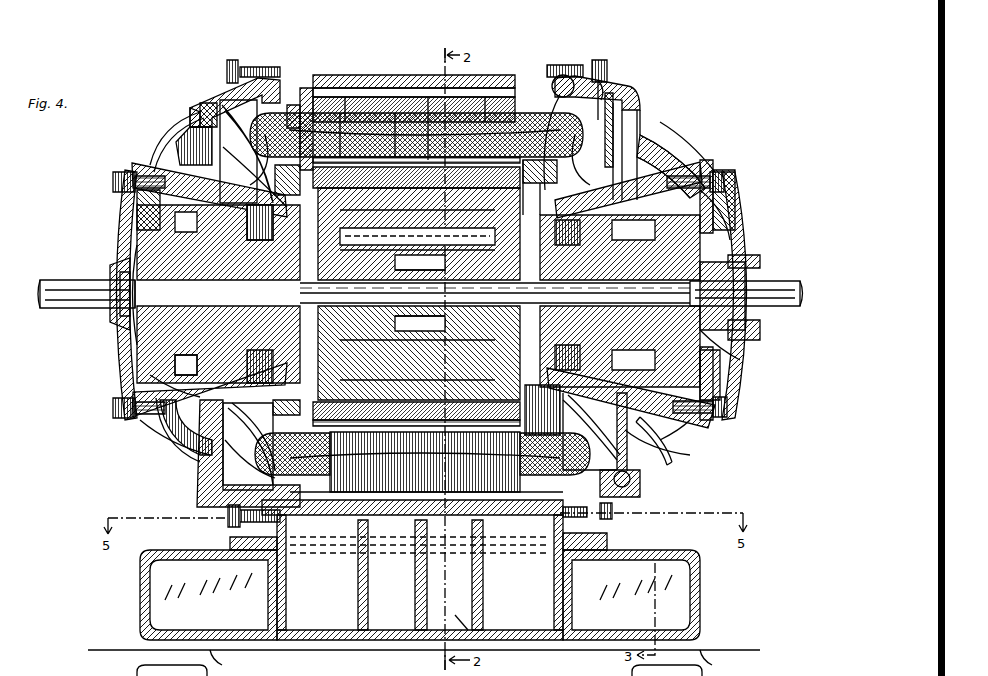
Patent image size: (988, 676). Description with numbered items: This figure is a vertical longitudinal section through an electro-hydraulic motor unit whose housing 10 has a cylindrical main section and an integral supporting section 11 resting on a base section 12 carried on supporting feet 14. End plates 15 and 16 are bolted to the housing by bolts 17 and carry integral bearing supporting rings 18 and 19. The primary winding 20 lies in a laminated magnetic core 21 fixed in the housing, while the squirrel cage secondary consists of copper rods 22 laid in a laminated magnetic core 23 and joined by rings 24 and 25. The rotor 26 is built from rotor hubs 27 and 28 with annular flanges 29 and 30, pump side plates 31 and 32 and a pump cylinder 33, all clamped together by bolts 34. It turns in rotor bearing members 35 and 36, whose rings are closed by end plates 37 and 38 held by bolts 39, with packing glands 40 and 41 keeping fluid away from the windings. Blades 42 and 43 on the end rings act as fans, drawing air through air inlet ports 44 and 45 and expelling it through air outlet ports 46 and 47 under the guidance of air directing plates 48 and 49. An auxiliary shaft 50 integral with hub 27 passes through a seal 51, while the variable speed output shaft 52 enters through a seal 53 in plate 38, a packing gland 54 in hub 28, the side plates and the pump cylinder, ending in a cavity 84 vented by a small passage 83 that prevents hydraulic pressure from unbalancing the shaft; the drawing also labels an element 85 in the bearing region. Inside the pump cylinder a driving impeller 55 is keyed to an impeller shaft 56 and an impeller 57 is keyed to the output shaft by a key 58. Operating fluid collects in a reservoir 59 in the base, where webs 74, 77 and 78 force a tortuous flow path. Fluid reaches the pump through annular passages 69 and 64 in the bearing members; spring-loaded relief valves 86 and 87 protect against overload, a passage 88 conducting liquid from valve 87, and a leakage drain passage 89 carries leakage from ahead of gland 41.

The housing 10 is at (395, 105).
The supporting section 11 is at (607, 540).
The base section 12 is at (140, 595).
The supporting feet 14 is at (222, 665).
The end plate 15 is at (212, 95).
The end plate 16 is at (630, 90).
The bolts 17 is at (234, 60).
The bearing supporting ring 18 is at (140, 165).
The bearing supporting ring 19 is at (705, 170).
The primary winding 20 is at (333, 470).
The magnetic core 21 is at (462, 470).
The rods 22 is at (215, 480).
The magnetic core 23 is at (340, 135).
The ring 24 is at (300, 195).
The ring 25 is at (540, 190).
The rotor 26 is at (500, 88).
The rotor hub 27 is at (166, 155).
The rotor hub 28 is at (700, 150).
The annular flange 29 is at (315, 95).
The annular flange 30 is at (557, 170).
The pump side plate 31 is at (345, 100).
The pump side plate 32 is at (485, 110).
The pump cylinder 33 is at (428, 140).
The bolts 34 is at (250, 185).
The rotor bearing member 35 is at (118, 200).
The rotor bearing member 36 is at (690, 220).
The end plate 37 is at (120, 220).
The end plate 38 is at (735, 225).
The bolts 39 is at (115, 175).
The packing gland 40 is at (297, 402).
The packing gland 41 is at (720, 368).
The blades 42 is at (257, 150).
The blades 43 is at (575, 75).
The air inlet ports 44 is at (182, 140).
The air inlet ports 45 is at (668, 145).
The air outlet ports 46 is at (293, 105).
The air outlet ports 47 is at (548, 88).
The air directing plate 48 is at (198, 115).
The air directing plate 49 is at (630, 140).
The shaft 50 is at (60, 280).
The seal 51 is at (112, 260).
The variable speed output shaft 52 is at (795, 281).
The seal 53 is at (745, 262).
The packing gland 54 is at (740, 345).
The driving impeller 55 is at (412, 245).
The impeller shaft 56 is at (490, 283).
The impeller 57 is at (425, 270).
The key 58 is at (392, 288).
The reservoir 59 is at (468, 630).
The annular fluid passage 64 is at (698, 190).
The annular passage 69 is at (178, 368).
The web 74 is at (415, 582).
The web 77 is at (358, 582).
The web 78 is at (472, 575).
The passage 83 is at (265, 318).
The cavity 84 is at (285, 300).
The hub 85 is at (565, 205).
The relief valve 86 is at (168, 450).
The relief valve 87 is at (672, 462).
The passage 88 is at (140, 420).
The passage 89 is at (205, 455).